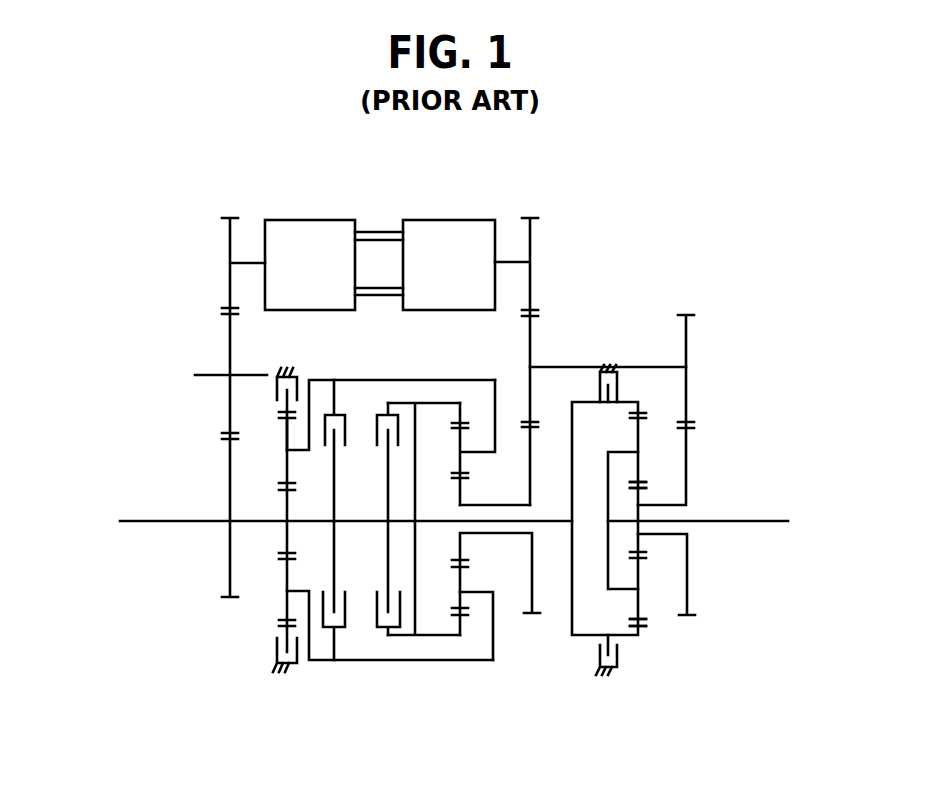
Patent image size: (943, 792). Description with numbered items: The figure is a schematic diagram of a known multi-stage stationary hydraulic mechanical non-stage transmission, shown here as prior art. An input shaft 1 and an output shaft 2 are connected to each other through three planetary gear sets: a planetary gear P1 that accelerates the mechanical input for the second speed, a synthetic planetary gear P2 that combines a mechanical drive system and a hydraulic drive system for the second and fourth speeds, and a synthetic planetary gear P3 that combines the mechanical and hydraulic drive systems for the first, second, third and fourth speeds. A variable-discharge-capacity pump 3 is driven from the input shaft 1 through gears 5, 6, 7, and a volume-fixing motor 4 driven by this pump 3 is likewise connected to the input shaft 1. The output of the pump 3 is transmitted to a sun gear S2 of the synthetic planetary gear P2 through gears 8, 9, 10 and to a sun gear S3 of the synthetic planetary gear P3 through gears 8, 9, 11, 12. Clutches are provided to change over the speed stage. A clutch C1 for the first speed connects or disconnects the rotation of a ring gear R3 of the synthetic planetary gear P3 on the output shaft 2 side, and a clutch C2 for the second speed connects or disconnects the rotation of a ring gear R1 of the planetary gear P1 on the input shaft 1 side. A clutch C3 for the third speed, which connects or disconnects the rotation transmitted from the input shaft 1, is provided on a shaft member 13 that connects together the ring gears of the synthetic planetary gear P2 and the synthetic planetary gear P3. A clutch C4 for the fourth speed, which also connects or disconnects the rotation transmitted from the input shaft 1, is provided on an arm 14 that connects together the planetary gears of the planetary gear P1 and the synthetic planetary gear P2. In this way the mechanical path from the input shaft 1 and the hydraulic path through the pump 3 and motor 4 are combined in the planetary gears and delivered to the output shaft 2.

The input shaft 1 is at (150, 520).
The output shaft 2 is at (765, 520).
The variable-discharge-capacity pump 3 is at (284, 221).
The volume-fixing motor 4 is at (482, 220).
The gear 5 is at (230, 478).
The gear 6 is at (230, 416).
The gear 7 is at (230, 285).
The gear 8 is at (533, 270).
The gear 9 is at (533, 343).
The gear 10 is at (530, 488).
The gear 11 is at (688, 356).
The gear 12 is at (688, 447).
The shaft member 13 is at (553, 519).
The arm 14 is at (396, 662).
The planetary gear P1 is at (274, 622).
The ring gear R1 is at (276, 641).
The clutch for the second speed C2 is at (276, 646).
The clutch for the third speed C3 is at (378, 438).
The clutch for the fourth speed C4 is at (345, 610).
The sun gear S2 is at (467, 543).
The synthetic planetary gear P2 is at (470, 624).
The clutch for the first speed C1 is at (594, 657).
The synthetic planetary gear P3 is at (648, 622).
The ring gear R3 is at (638, 408).
The sun gear S3 is at (648, 498).